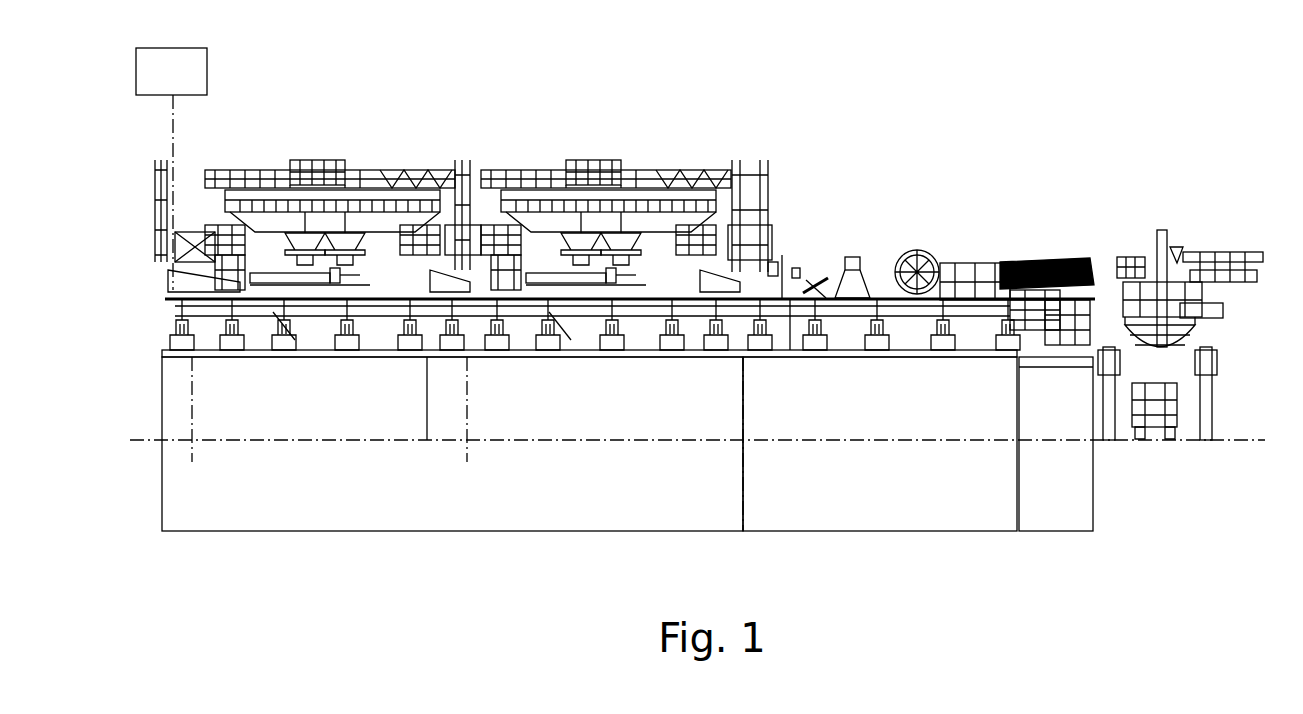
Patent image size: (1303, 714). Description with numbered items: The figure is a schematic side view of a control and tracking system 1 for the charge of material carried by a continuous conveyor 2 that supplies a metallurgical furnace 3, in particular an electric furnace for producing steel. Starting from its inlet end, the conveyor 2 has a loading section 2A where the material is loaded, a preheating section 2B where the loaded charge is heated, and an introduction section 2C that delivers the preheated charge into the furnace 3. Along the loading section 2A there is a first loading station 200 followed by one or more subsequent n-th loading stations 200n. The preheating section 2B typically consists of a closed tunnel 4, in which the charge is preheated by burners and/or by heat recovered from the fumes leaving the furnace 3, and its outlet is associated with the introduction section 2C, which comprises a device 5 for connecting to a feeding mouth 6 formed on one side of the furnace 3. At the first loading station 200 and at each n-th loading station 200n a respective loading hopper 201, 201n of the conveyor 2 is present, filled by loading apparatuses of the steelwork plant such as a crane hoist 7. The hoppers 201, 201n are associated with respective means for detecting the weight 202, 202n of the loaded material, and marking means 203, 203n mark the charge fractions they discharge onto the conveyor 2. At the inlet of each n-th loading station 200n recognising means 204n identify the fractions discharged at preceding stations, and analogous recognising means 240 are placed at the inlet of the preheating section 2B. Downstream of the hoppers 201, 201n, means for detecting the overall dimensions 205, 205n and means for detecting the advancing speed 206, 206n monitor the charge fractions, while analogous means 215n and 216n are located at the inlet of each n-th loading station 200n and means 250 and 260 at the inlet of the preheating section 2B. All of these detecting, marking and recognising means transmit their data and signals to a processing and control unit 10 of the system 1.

The control and tracking system 1 is at (138, 210).
The continuous conveyor 2 is at (160, 307).
The loading section 2A is at (589, 440).
The preheating section 2B is at (880, 444).
The introduction section 2C is at (1056, 444).
The metallurgical furnace 3 is at (1210, 340).
The closed tunnel 4 is at (877, 284).
The connecting device 5 is at (1075, 260).
The feeding mouth 6 is at (1152, 288).
The crane hoist 7 is at (348, 228).
The processing and control unit 10 is at (172, 48).
The first loading station 200 is at (325, 253).
The n-th loading station 200n is at (612, 280).
The first loading hopper 201 is at (262, 205).
The n-th loading hopper 201n is at (606, 132).
The weight detecting means 202 is at (282, 280).
The weight detecting means 202n is at (586, 355).
The marking means 203 is at (330, 272).
The marking means 203n is at (634, 338).
The recognising means 204n is at (498, 331).
The means for detecting the overall dimensions 205 is at (345, 273).
The means for detecting the overall dimensions 205n is at (727, 188).
The means for detecting the advancing speed 206 is at (333, 283).
The means for detecting the advancing speed 206n is at (640, 356).
The means for detecting the overall dimensions 215n is at (609, 172).
The means for detecting the advancing speed 216n is at (472, 192).
The recognising means 240 is at (775, 262).
The means for detecting the overall dimensions 250 is at (798, 270).
The means for detecting the advancing speed 260 is at (790, 350).